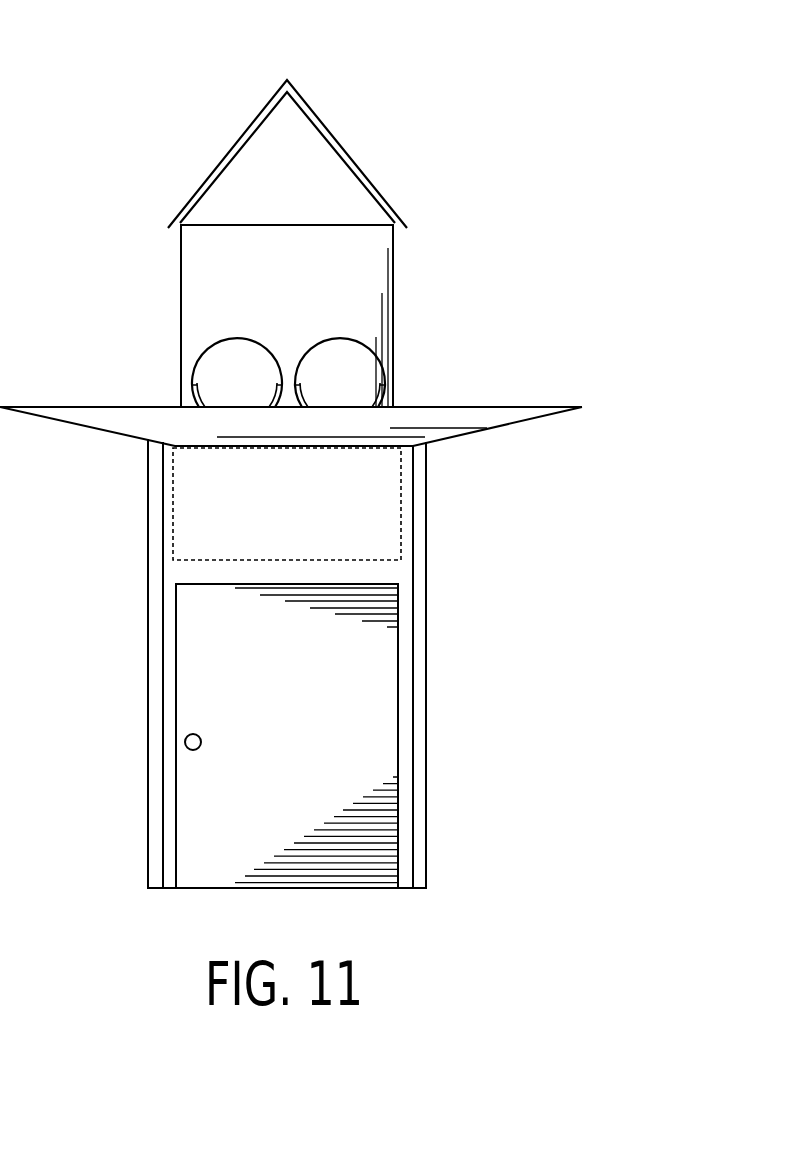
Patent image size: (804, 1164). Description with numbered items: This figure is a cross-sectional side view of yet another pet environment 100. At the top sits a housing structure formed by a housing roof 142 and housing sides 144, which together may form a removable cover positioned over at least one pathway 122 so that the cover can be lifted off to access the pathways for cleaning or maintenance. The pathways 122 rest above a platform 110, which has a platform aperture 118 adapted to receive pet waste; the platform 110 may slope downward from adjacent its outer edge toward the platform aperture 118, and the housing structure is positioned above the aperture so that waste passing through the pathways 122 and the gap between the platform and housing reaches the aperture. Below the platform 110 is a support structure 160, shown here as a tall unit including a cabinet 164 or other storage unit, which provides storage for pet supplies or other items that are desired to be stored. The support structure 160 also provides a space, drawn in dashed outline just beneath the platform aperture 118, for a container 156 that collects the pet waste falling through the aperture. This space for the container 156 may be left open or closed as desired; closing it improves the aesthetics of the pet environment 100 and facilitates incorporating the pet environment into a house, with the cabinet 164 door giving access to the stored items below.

The pet environment 100 is at (563, 90).
The platform 110 is at (437, 413).
The platform aperture 118 is at (287, 448).
The pathway 122 is at (340, 377).
The housing roof 142 is at (213, 172).
The housing sides 144 is at (180, 265).
The container 156 is at (218, 500).
The support structure 160 is at (441, 618).
The cabinet 164 is at (198, 703).